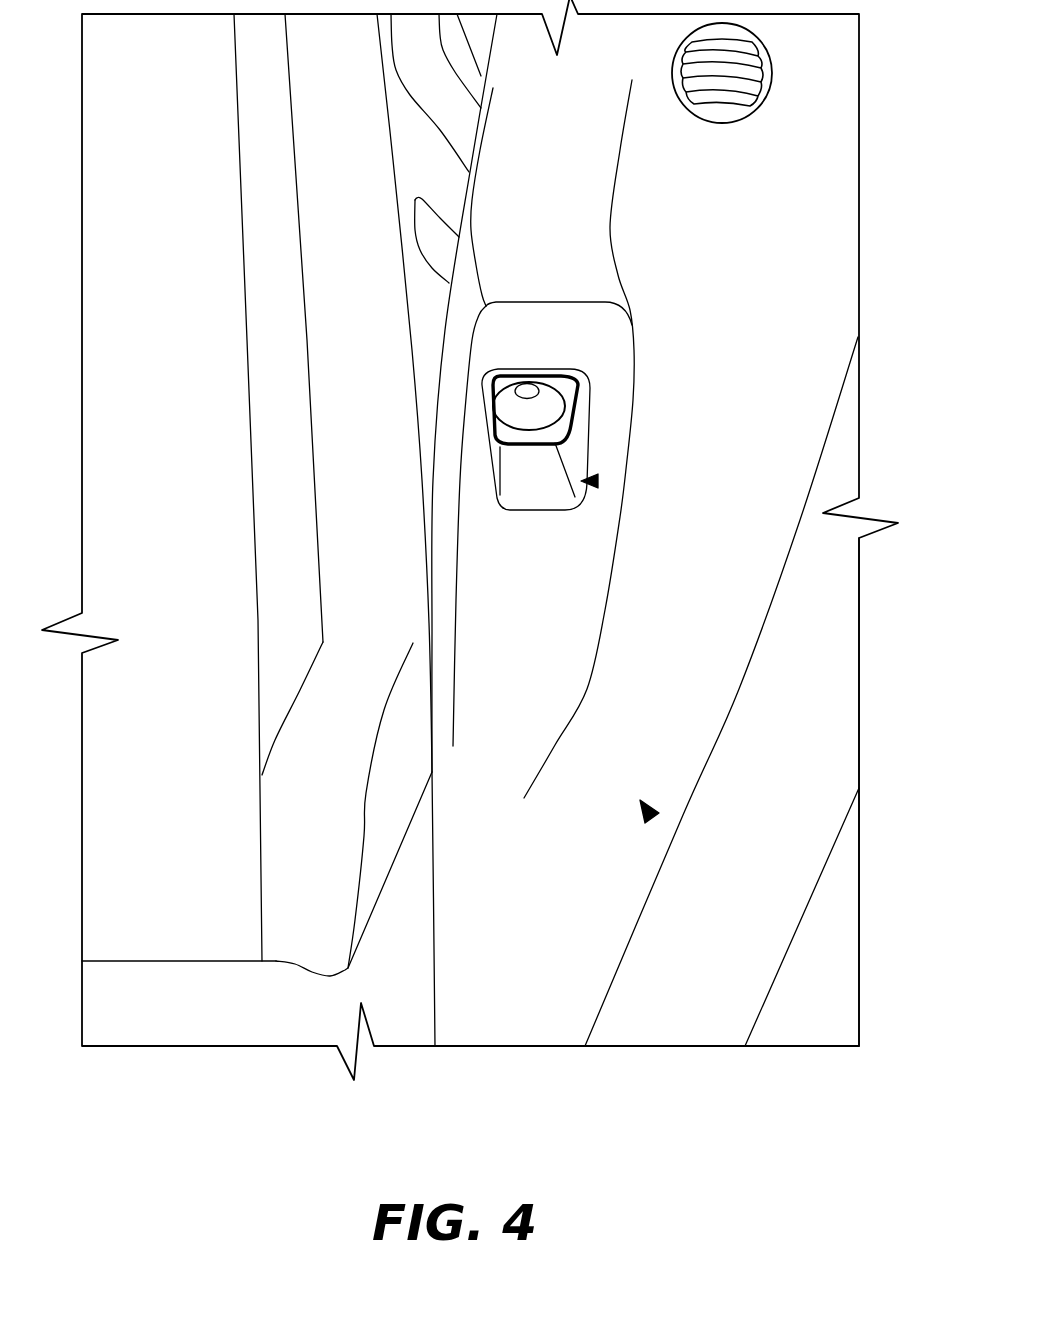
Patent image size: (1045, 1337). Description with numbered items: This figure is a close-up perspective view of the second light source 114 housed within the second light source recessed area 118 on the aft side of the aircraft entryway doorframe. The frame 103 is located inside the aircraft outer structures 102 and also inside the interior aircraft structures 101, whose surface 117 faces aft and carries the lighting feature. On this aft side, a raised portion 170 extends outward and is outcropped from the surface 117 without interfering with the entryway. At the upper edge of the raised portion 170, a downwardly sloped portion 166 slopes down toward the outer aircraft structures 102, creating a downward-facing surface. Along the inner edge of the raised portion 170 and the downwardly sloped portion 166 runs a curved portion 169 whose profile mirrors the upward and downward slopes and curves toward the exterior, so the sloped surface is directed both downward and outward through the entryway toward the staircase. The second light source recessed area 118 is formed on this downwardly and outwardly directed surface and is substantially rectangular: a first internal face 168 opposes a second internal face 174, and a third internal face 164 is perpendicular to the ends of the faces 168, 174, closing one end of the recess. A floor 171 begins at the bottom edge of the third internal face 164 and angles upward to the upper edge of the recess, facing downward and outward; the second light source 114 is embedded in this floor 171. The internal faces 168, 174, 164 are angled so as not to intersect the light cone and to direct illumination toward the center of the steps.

The interior aircraft structures 101 is at (651, 816).
The aircraft outer structures 102 is at (800, 1020).
The frame 103 is at (798, 729).
The second light source 114 is at (537, 412).
The front face 117 is at (758, 233).
The second light source recessed area 118 is at (598, 481).
The third internal face 164 is at (540, 493).
The downwardly sloped portion 166 is at (497, 560).
The first internal face 168 is at (493, 453).
The curved portion 169 is at (453, 357).
The raised portion 170 is at (513, 278).
The floor 171 is at (503, 430).
The second internal face 174 is at (575, 444).